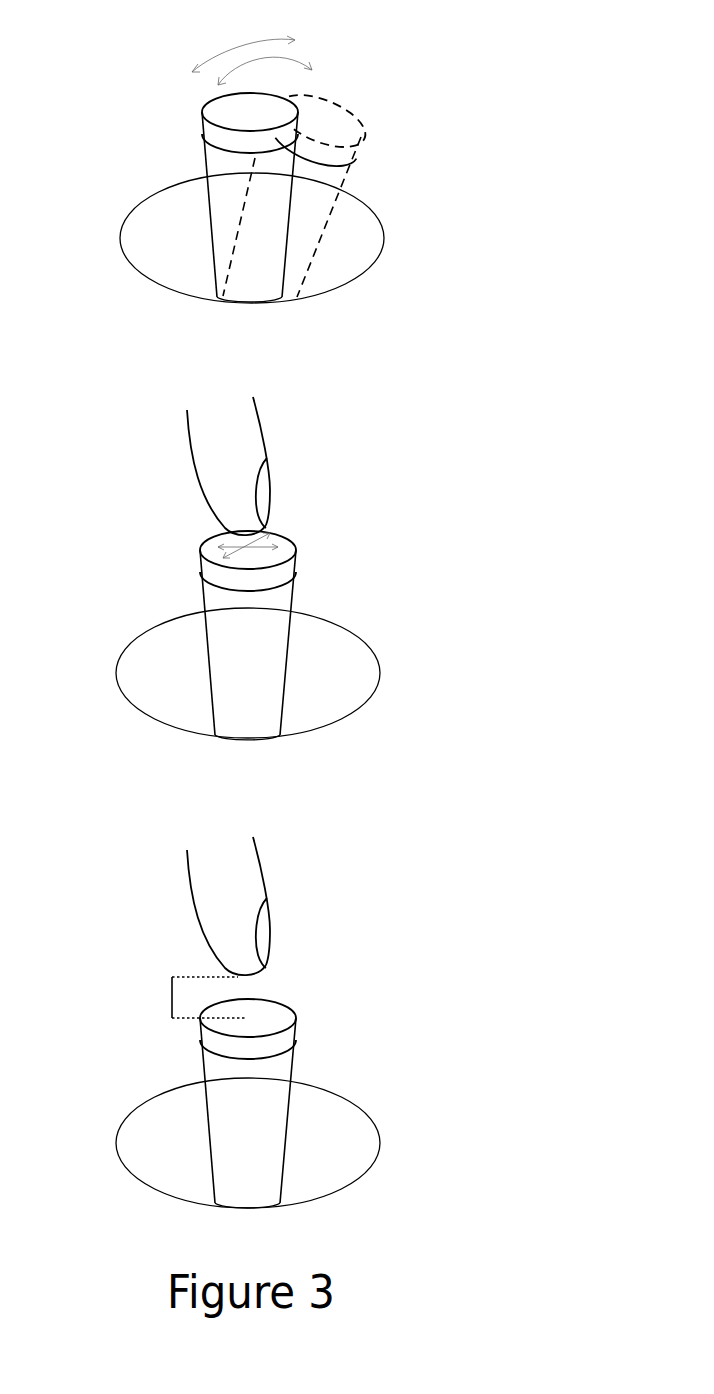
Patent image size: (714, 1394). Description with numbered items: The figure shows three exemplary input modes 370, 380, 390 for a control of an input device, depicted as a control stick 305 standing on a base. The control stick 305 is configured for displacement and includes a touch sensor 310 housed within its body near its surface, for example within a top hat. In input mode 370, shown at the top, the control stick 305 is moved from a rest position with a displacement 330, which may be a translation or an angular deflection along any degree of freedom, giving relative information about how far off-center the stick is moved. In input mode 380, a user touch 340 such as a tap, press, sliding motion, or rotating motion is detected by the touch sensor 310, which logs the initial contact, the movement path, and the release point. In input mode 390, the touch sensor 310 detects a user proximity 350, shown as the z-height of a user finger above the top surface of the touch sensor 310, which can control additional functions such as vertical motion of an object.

The control stick 305 is at (212, 220).
The touch sensor 310 is at (285, 572).
The displacement 330 is at (307, 29).
The user touch 340 is at (310, 492).
The user proximity 350 is at (310, 948).
The input mode 370 is at (525, 177).
The input mode 380 is at (525, 614).
The input mode 390 is at (525, 1078).